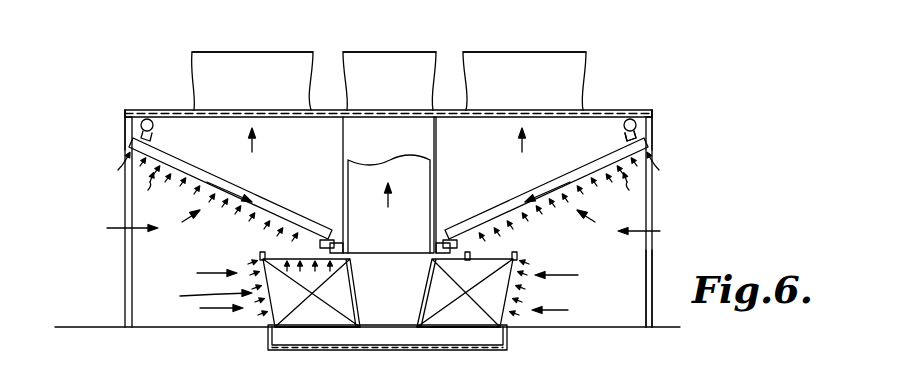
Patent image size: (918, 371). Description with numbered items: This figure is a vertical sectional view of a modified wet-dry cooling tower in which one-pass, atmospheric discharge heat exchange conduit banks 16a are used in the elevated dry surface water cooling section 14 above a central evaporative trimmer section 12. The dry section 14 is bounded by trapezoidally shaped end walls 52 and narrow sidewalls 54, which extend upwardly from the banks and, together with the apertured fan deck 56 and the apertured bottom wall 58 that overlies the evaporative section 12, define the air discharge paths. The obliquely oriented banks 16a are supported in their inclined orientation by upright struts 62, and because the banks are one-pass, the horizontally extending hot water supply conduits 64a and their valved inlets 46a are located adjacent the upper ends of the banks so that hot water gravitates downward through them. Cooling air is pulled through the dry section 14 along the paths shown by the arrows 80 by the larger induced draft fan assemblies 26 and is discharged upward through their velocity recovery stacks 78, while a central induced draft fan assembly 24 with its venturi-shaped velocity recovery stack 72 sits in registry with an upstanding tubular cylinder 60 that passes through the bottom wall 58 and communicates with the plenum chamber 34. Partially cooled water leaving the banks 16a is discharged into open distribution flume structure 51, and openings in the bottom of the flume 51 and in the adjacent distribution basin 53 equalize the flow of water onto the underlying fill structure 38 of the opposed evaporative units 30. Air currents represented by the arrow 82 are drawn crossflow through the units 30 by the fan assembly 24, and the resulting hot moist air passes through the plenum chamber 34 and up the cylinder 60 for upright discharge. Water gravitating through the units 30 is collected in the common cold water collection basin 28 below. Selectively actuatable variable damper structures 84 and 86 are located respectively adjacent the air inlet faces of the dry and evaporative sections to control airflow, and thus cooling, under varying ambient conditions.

The evaporative water cooling trimmer section 12 is at (363, 296).
The dry surface water cooling section 14 is at (662, 153).
The one-pass heat exchange conduit bank 16a is at (280, 198).
The induced draft fan assembly 24 is at (412, 47).
The induced draft fan assembly 26 is at (190, 58).
The cold water collection basin 28 is at (508, 340).
The evaporative unit 30 is at (432, 294).
The central plenum chamber 34 is at (409, 266).
The evaporative fill structure 38 is at (358, 318).
The inlet 46a is at (625, 137).
The open distribution flume structure 51 is at (472, 255).
The end wall 52 is at (335, 146).
The distribution basin 53 is at (518, 256).
The sidewall 54 is at (125, 124).
The fan deck 56 is at (495, 111).
The bottom wall 58 is at (442, 240).
The tubular cylinder 60 is at (436, 180).
The upright strut 62 is at (647, 306).
The hot water supply conduit 64a is at (155, 126).
The velocity recovery stack 72 is at (377, 58).
The velocity recovery stack 78 is at (285, 60).
The dry section air flow arrows 80 is at (255, 145).
The evaporative section air flow arrow 82 is at (388, 207).
The variable damper structure 84 is at (388, 196).
The variable damper structure 86 is at (262, 322).